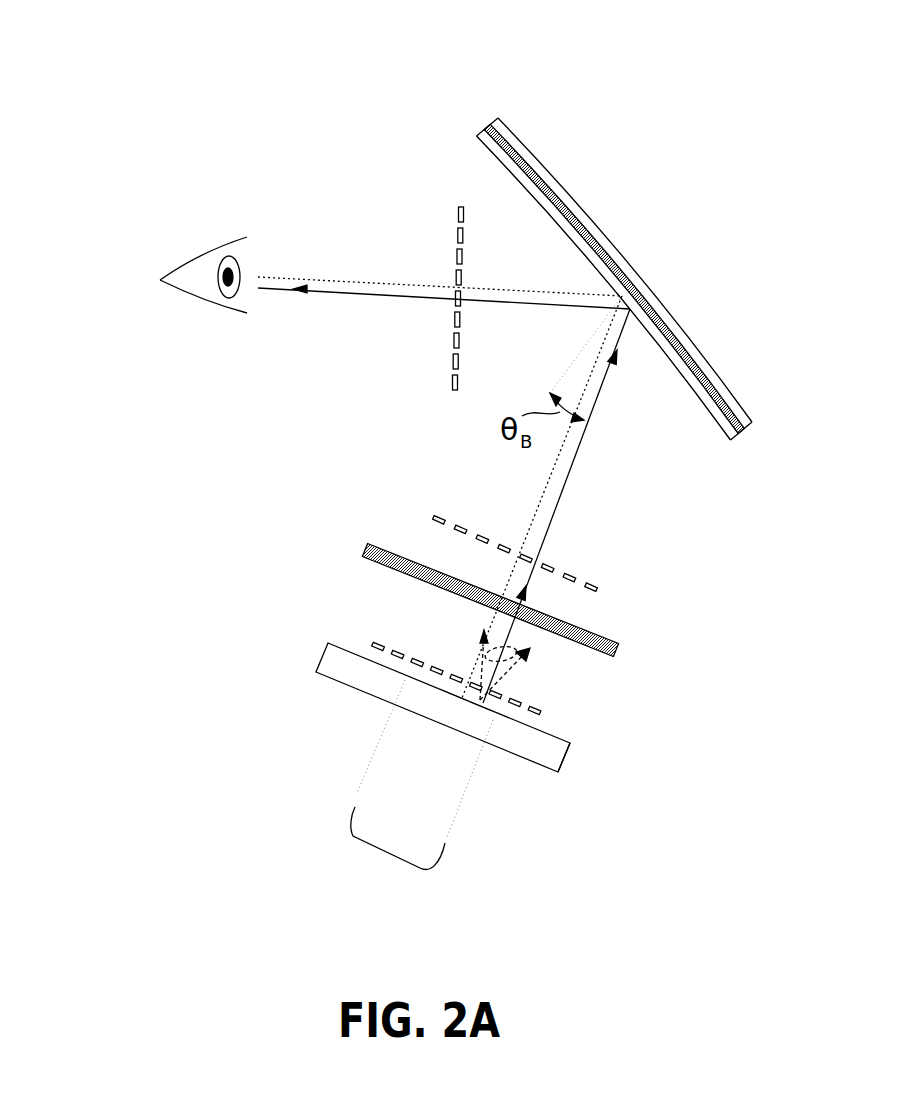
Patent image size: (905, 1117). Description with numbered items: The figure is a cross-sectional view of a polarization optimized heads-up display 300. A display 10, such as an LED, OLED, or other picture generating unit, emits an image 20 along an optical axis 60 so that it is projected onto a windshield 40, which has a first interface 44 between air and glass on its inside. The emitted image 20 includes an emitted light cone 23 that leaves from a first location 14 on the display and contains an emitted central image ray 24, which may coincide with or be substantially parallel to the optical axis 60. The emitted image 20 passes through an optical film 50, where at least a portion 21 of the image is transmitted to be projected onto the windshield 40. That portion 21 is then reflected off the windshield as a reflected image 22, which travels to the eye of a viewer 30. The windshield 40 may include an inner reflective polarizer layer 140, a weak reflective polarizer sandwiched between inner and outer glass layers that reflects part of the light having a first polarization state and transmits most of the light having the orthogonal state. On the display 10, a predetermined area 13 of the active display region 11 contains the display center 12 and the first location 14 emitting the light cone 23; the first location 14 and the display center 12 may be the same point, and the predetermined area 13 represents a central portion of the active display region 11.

The polarization optimized heads-up display 300 is at (133, 83).
The windshield 40 is at (578, 251).
The first interface 44 is at (496, 160).
The inner reflective polarizer layer 140 is at (580, 216).
The eye of a viewer 30 is at (200, 262).
The reflected image 22 is at (454, 340).
The optical axis 60 is at (543, 487).
The emitted central image ray 24 is at (549, 527).
The portion of the image 21 is at (600, 590).
The optical film 50 is at (620, 655).
The display 10 is at (447, 708).
The emitted image 20 is at (541, 718).
The active display region 11 is at (548, 740).
The display center 12 is at (452, 693).
The first location 14 is at (478, 707).
The emitted light cone 23 is at (503, 678).
The predetermined area 13 is at (385, 852).